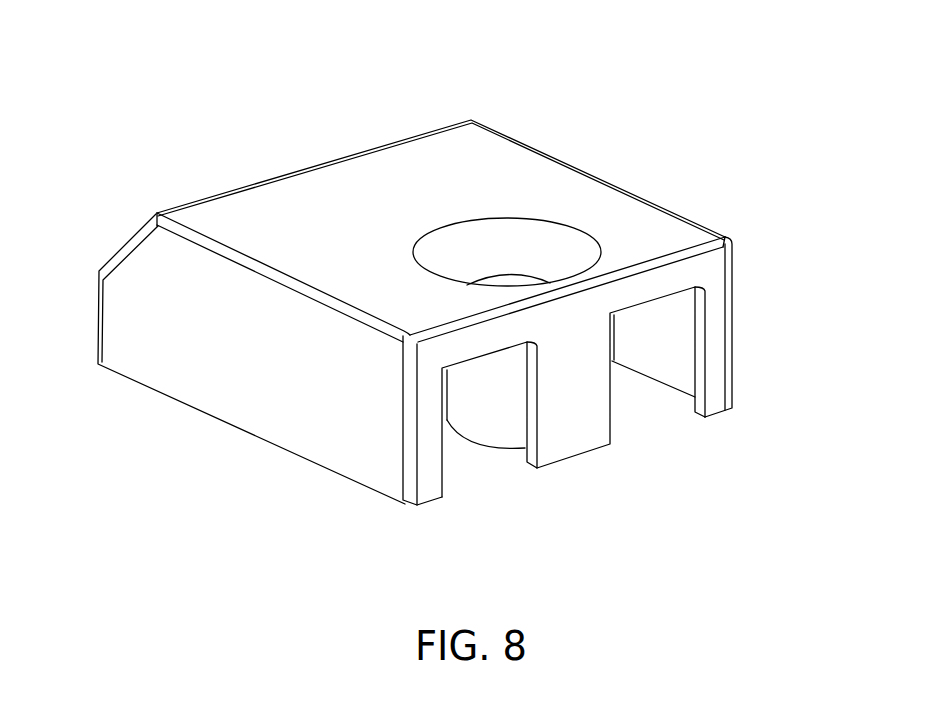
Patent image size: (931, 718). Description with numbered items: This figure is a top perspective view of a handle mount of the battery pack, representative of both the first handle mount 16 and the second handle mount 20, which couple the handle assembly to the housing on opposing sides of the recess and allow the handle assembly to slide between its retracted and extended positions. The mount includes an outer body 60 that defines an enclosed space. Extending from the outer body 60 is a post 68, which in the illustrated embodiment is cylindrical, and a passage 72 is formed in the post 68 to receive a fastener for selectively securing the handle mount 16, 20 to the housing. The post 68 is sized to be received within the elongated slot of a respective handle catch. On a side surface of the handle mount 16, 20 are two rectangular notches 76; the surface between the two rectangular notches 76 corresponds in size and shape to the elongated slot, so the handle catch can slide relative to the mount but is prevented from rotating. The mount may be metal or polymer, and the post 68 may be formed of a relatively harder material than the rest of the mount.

The first handle mount 16 is at (435, 289).
The second handle mount 20 is at (435, 289).
The outer body 60 is at (482, 145).
The passage 72 is at (543, 245).
The post 68 is at (500, 433).
The rectangular notches 76 is at (468, 473).